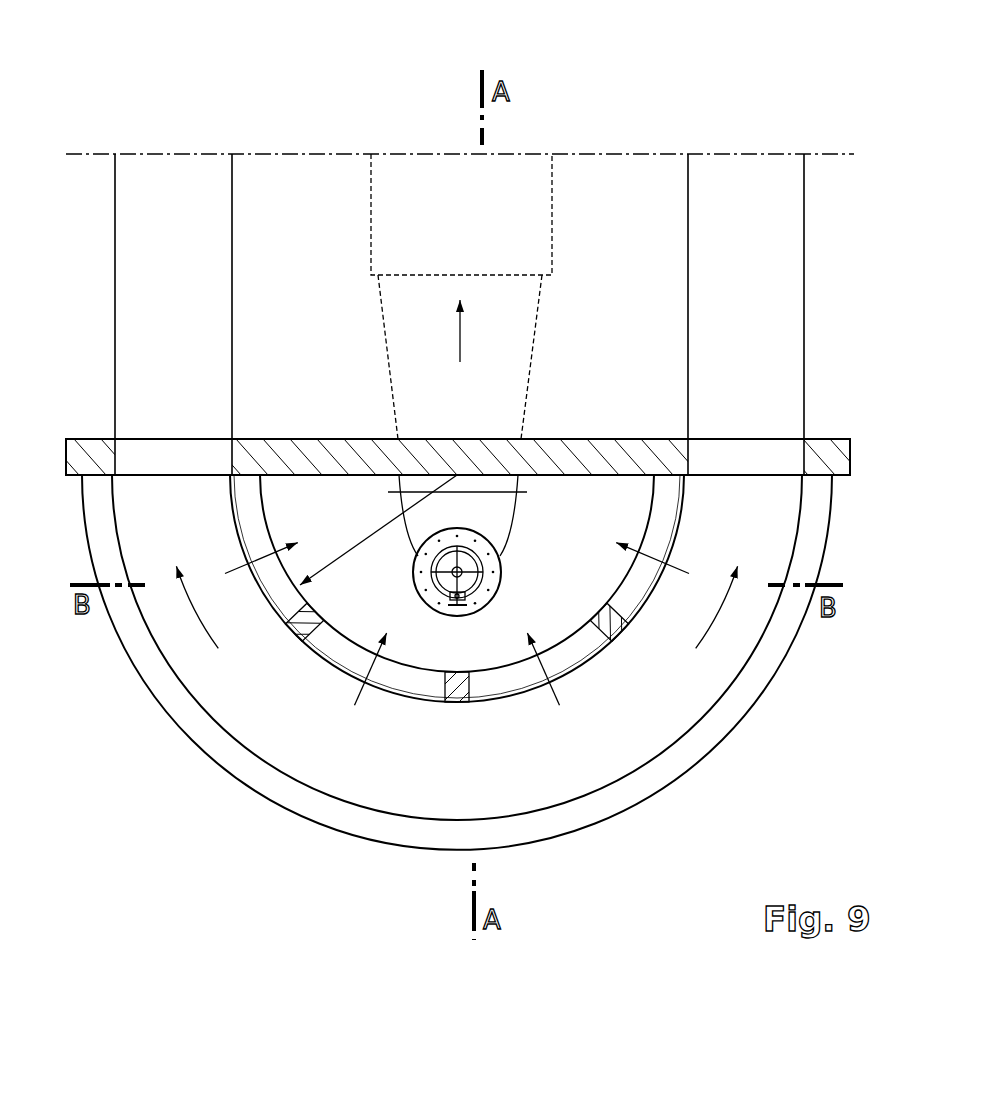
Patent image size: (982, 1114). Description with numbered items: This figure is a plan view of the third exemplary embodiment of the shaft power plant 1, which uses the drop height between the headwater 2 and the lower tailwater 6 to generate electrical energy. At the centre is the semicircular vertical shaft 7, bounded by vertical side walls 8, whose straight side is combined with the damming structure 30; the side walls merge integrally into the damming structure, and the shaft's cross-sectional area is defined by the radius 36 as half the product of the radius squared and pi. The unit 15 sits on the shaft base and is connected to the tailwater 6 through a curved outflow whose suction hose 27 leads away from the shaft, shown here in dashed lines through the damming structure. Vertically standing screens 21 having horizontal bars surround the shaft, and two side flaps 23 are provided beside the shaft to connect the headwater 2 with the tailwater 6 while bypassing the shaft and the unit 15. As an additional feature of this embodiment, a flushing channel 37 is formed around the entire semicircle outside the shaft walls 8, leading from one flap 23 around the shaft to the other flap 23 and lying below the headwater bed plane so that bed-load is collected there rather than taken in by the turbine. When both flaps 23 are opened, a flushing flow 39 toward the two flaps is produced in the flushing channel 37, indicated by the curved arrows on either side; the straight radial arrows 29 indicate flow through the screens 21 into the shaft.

The shaft power plant 1 is at (588, 82).
The headwater 2 is at (793, 731).
The tailwater 6 is at (519, 135).
The vertical shaft 7 is at (706, 492).
The side walls 8 is at (418, 690).
The unit 15 is at (513, 575).
The screen 21 is at (590, 665).
The flap 23 is at (165, 450).
The suction hose 27 is at (538, 318).
The radial flow direction 29 is at (237, 562).
The damming structure 30 is at (85, 448).
The radius 36 is at (357, 545).
The flushing channel 37 is at (682, 703).
The flushing flow 39 is at (202, 617).